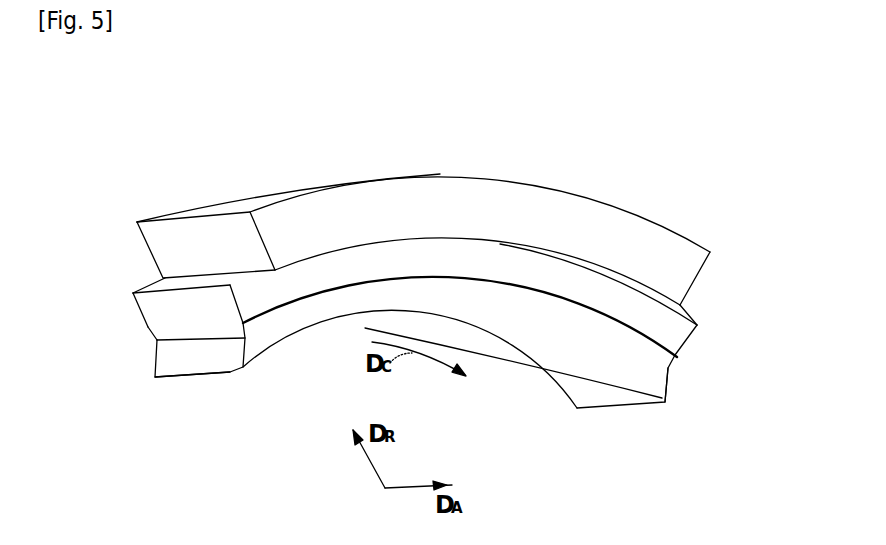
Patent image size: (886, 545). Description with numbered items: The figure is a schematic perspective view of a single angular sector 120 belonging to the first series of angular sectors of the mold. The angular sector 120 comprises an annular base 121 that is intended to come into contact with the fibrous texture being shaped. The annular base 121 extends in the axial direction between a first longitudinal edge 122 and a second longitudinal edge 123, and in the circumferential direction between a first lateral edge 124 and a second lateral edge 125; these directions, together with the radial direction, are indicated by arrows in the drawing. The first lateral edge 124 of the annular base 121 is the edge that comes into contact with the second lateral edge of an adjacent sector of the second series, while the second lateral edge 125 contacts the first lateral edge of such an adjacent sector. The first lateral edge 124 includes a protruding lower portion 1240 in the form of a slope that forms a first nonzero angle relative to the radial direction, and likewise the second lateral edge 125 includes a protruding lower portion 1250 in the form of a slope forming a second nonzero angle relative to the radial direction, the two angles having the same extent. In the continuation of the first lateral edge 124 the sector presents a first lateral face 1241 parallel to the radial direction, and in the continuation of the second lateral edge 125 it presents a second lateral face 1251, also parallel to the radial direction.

The angular sector 120 is at (423, 277).
The annular base 121 is at (507, 355).
The first longitudinal edge 122 is at (588, 343).
The second longitudinal edge 123 is at (132, 302).
The first lateral edge 124 is at (222, 327).
The protruding lower portion 1240 is at (182, 360).
The first lateral face 1241 is at (172, 300).
The second lateral edge 125 is at (672, 363).
The protruding lower portion 1250 is at (670, 387).
The second lateral face 1251 is at (698, 325).